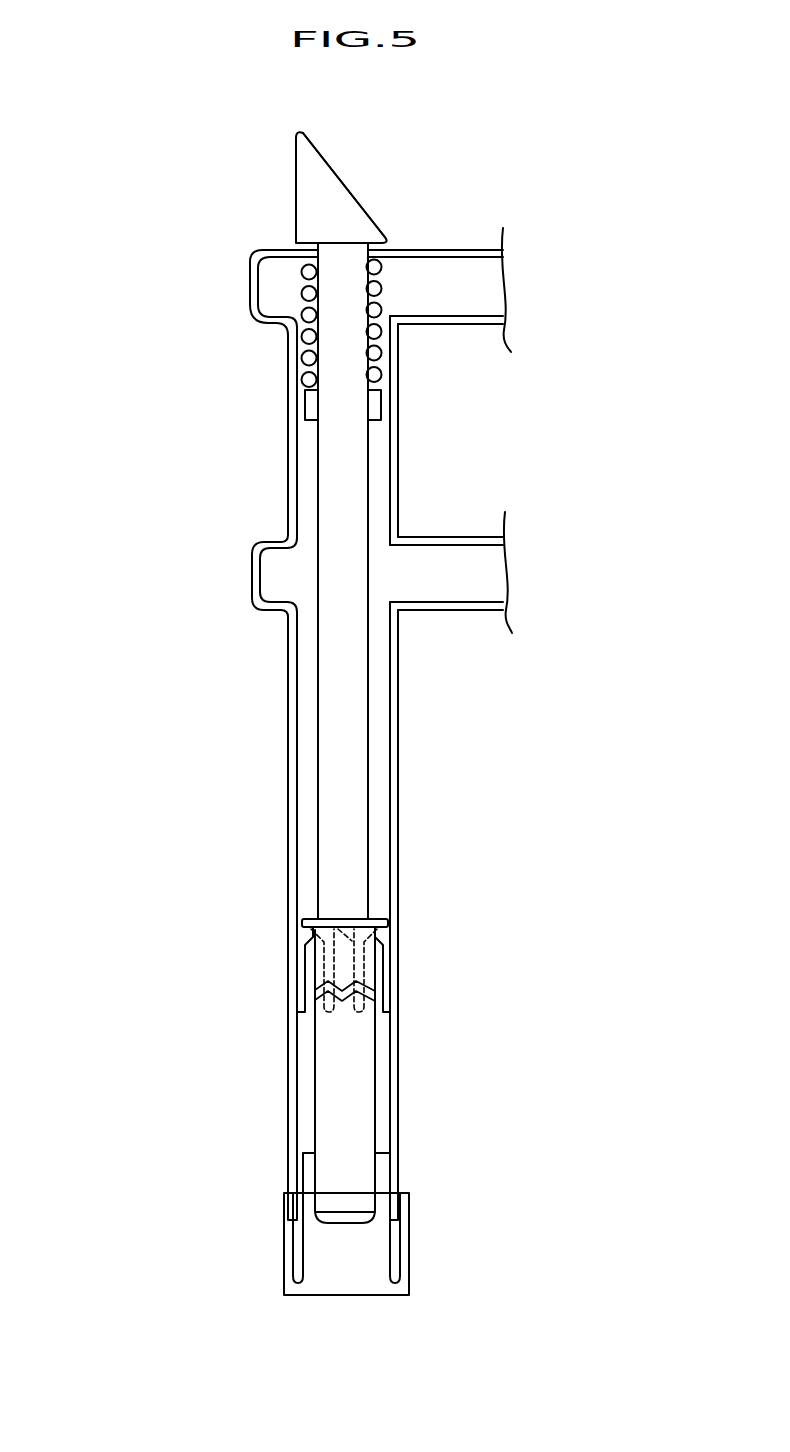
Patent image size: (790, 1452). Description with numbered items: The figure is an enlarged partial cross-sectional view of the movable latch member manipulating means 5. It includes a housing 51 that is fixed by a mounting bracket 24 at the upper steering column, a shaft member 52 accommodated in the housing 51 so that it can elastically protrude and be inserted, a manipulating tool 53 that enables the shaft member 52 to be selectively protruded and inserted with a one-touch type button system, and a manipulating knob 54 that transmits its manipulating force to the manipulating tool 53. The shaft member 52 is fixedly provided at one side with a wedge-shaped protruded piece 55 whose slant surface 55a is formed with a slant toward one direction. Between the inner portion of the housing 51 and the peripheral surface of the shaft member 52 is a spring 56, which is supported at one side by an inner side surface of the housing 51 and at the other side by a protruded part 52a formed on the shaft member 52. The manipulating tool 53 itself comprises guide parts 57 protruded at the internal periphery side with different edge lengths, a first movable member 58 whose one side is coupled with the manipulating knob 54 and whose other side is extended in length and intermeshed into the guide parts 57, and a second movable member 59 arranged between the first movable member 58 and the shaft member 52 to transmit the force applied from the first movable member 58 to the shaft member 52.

The movable latch member manipulating means 5 is at (138, 366).
The mounting bracket 24 is at (448, 324).
The housing 51 is at (293, 513).
The shaft member 52 is at (355, 810).
The protruded part 52a is at (310, 404).
The manipulating tool 53 is at (212, 944).
The manipulating knob 54 is at (347, 1275).
The wedge-shaped protruded piece 55 is at (313, 206).
The slant surface 55a is at (350, 187).
The spring 56 is at (307, 340).
The guide parts 57 is at (318, 961).
The first movable member 58 is at (355, 1072).
The second movable member 59 is at (390, 923).